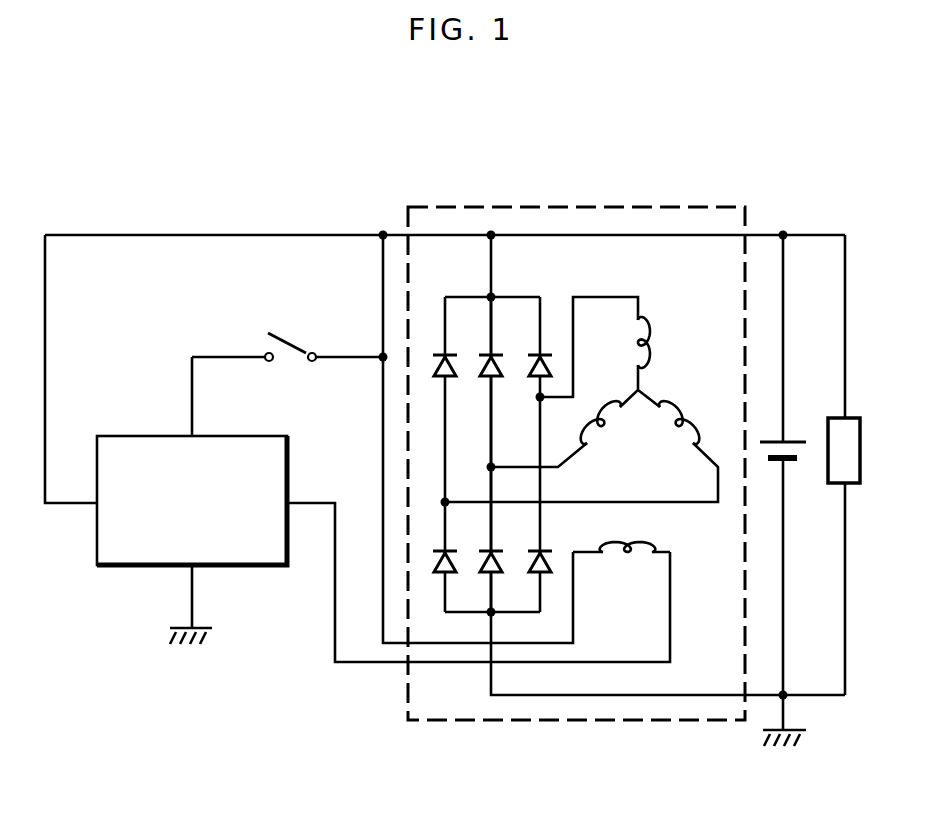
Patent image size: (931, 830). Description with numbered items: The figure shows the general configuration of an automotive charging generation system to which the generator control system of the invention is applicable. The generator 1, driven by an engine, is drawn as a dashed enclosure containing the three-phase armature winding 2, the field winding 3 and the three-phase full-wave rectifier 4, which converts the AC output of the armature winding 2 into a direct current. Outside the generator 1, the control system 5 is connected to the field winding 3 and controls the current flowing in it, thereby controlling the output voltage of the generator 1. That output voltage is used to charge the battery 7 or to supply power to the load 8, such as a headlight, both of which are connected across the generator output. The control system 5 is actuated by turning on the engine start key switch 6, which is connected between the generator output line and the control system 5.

The generator 1 is at (558, 722).
The armature winding 2 is at (644, 384).
The field winding 3 is at (626, 559).
The full-wave rectifier 4 is at (503, 302).
The control system 5 is at (137, 436).
The key switch 6 is at (287, 339).
The battery 7 is at (785, 441).
The load 8 is at (861, 438).